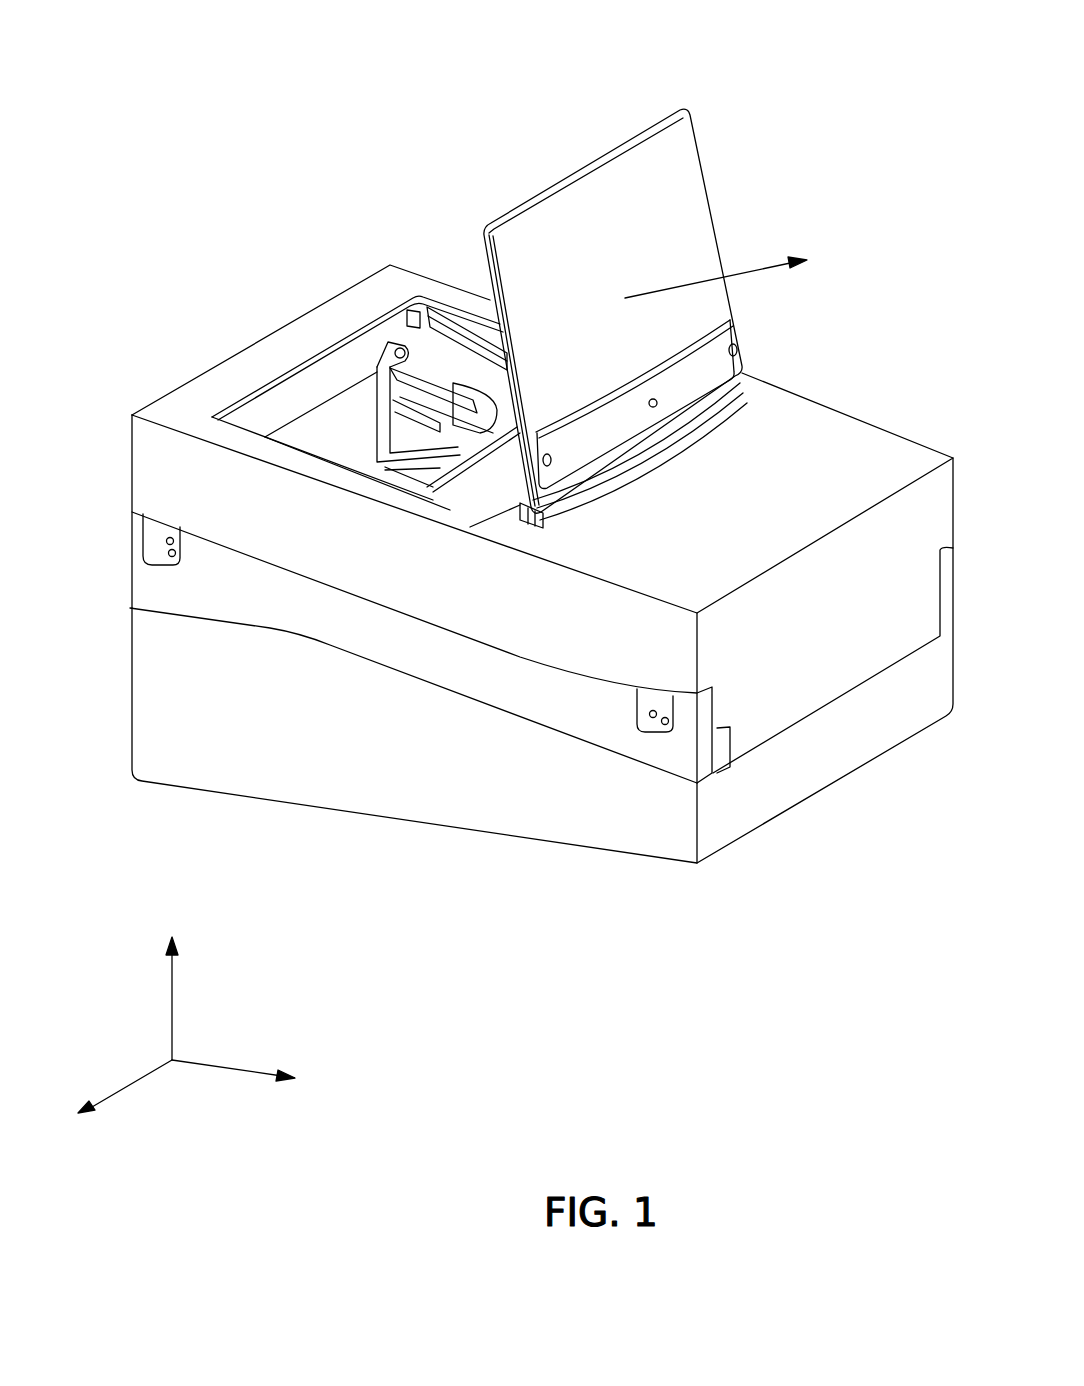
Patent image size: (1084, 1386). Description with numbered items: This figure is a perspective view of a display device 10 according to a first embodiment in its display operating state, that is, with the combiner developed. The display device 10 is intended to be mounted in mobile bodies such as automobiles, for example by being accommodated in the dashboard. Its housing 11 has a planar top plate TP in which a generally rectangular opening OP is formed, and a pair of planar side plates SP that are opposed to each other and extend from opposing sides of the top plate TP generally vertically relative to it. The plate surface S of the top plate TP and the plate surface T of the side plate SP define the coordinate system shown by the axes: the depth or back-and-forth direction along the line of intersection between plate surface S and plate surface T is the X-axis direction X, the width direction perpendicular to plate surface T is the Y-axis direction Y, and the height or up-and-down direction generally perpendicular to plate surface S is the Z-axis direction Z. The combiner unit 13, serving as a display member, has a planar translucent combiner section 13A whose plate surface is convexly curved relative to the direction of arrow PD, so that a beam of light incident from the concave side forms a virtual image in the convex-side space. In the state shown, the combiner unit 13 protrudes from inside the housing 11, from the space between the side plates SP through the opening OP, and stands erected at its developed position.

The display device 10 is at (862, 213).
The housing 11 is at (134, 270).
The combiner unit 13 is at (653, 118).
The combiner section 13A is at (683, 187).
The opening OP is at (300, 360).
The plate surface of the top plate S is at (243, 385).
The plate surface of the side plate T is at (158, 701).
The top plate TP is at (180, 413).
The side plates SP is at (122, 432).
The direction of arrow PD is at (727, 261).
The X-axis direction X is at (247, 1079).
The Y-axis direction Y is at (110, 1098).
The Z-axis direction Z is at (172, 981).